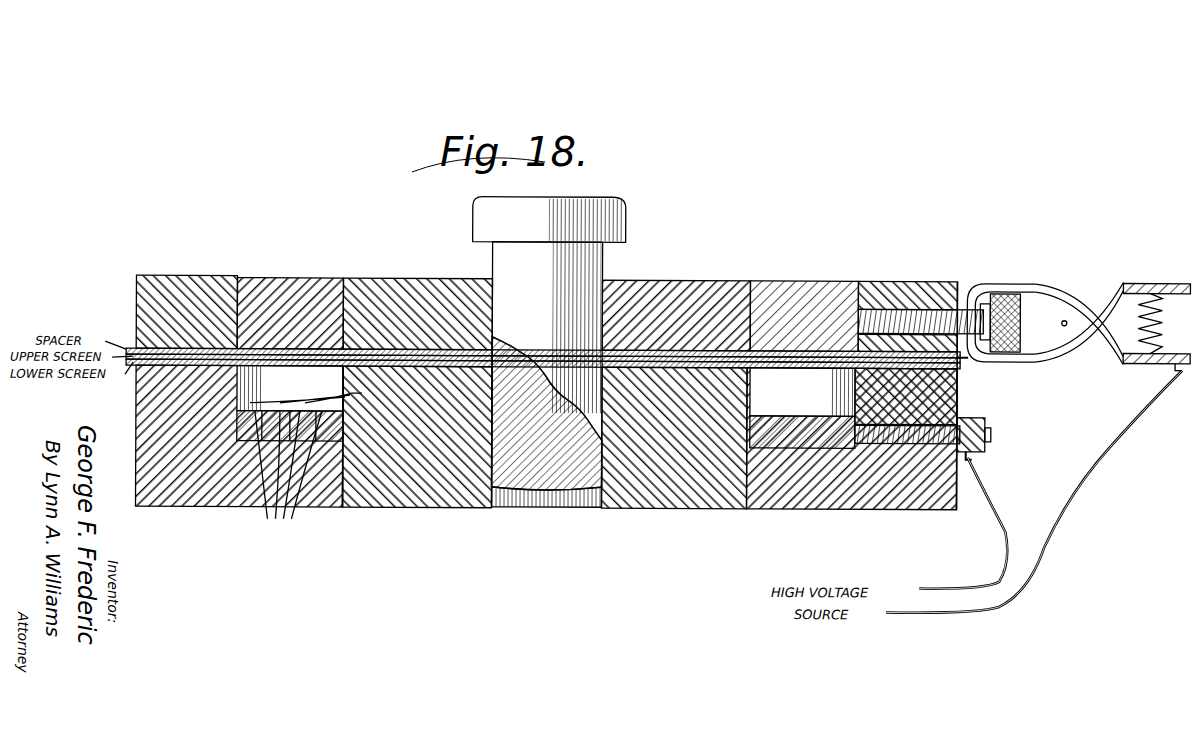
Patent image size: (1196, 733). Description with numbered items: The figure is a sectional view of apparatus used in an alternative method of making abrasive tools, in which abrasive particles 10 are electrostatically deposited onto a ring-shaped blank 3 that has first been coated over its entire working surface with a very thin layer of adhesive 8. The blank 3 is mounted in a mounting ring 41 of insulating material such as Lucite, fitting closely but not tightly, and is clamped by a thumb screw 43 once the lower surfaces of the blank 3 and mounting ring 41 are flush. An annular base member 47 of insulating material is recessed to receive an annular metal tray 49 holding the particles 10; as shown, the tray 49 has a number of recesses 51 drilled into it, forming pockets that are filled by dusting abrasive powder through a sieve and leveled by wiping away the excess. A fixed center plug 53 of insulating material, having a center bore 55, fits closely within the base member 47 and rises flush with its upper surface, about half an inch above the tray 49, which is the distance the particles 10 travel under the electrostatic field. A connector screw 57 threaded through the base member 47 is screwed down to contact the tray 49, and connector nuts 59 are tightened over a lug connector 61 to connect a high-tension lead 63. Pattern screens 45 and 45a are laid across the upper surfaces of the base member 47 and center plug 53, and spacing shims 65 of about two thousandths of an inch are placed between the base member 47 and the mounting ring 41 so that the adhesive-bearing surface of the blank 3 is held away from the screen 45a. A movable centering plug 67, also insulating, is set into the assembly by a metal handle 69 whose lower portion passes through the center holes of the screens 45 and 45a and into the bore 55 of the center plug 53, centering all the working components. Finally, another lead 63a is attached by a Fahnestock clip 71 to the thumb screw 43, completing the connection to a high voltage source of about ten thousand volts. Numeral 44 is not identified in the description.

The blank 3 is at (305, 300).
The layer of adhesive 8 is at (330, 355).
The abrasive particles 10 is at (320, 392).
The mounting ring 41 is at (136, 300).
The thumb screw 43 is at (1020, 300).
The upper end block 44 is at (920, 290).
The pattern screen 45 is at (958, 372).
The pattern screen 45a is at (965, 357).
The annular base member 47 is at (900, 490).
The annular metal tray 49 is at (760, 507).
The recesses 51 is at (288, 477).
The fixed center plug 53 is at (700, 505).
The center bore 55 is at (540, 506).
The connector screw 57 is at (990, 440).
The connector nuts 59 is at (985, 430).
The lug connector 61 is at (975, 458).
The high-tension lead 63 is at (1005, 520).
The lead 63a is at (1075, 490).
The spacing shims 65 is at (126, 350).
The movable centering plug 67 is at (690, 300).
The metal handle 69 is at (600, 224).
The Fahnestock clip 71 is at (1110, 290).